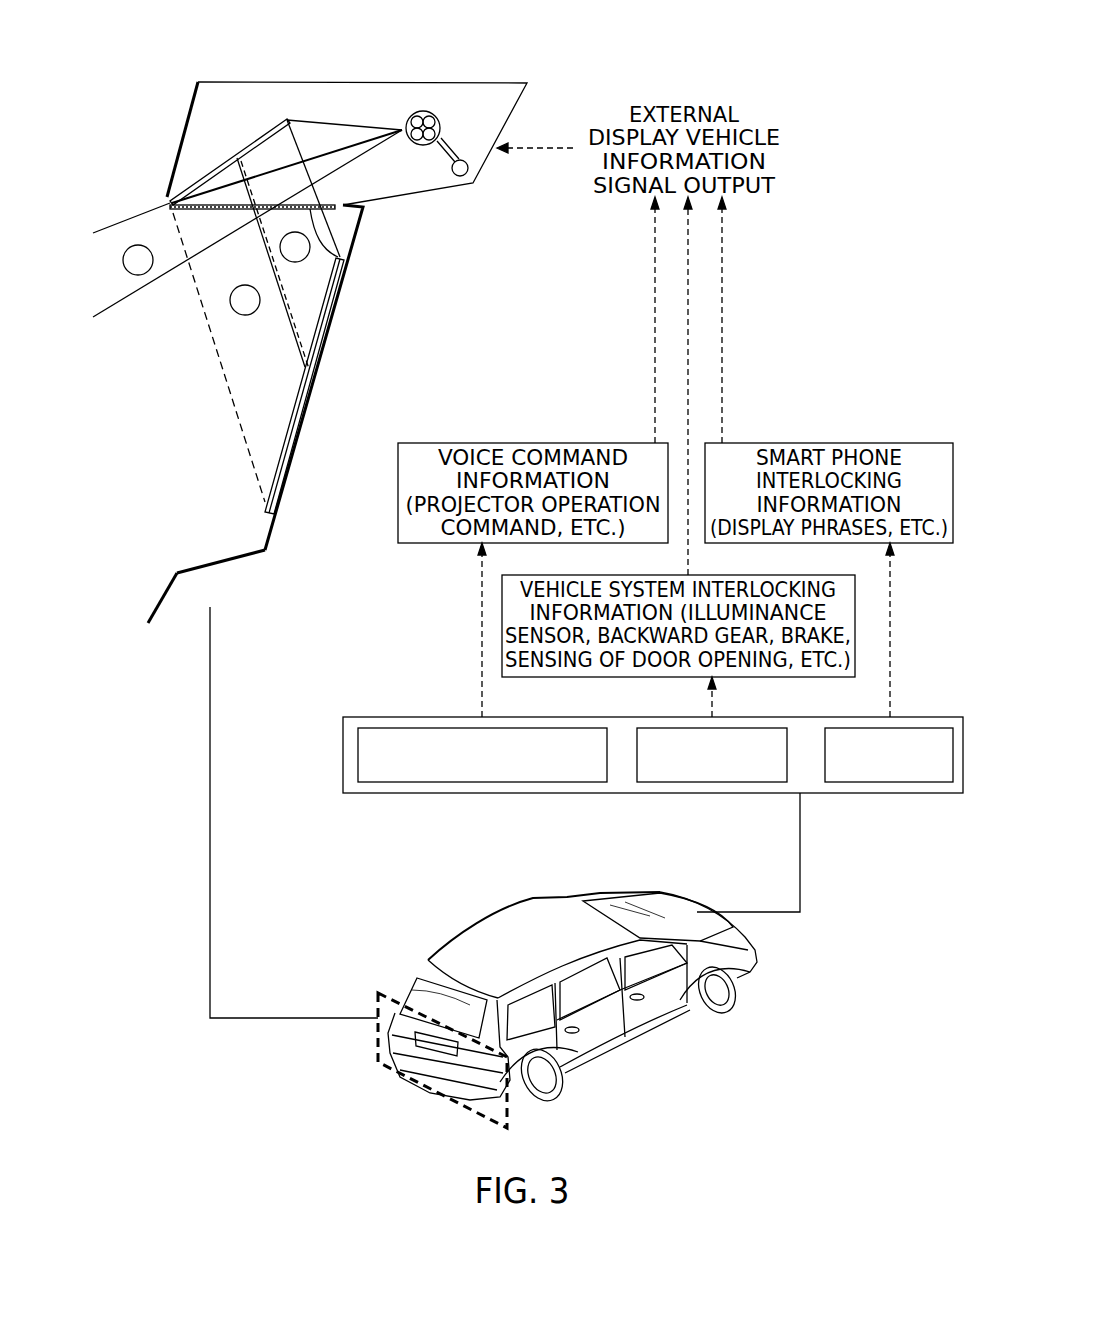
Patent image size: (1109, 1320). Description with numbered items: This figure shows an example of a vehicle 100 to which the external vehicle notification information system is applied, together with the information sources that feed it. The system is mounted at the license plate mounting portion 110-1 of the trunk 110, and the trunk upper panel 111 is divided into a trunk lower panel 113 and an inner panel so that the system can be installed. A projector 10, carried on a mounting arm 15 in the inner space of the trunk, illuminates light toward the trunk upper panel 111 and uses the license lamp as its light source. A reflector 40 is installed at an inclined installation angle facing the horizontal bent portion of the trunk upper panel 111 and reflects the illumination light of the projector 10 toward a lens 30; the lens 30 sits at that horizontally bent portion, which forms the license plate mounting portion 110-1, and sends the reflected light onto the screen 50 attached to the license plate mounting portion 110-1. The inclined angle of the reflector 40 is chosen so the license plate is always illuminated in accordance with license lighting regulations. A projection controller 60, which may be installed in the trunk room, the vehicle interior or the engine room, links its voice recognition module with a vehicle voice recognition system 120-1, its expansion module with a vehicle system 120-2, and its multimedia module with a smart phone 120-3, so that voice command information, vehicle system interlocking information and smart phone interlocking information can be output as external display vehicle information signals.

The projector 10 is at (430, 110).
The projector mounting arm 15 is at (430, 195).
The lens 30 is at (343, 277).
The reflector 40 is at (247, 140).
The screen 50 is at (330, 327).
The projection controller 60 is at (937, 795).
The vehicle 100 is at (547, 908).
The trunk 110 is at (168, 100).
The license plate mounting portion 110-1 is at (272, 530).
The trunk upper panel 111 is at (175, 155).
The trunk lower panel 113 is at (230, 562).
The vehicle voice recognition system 120-1 is at (438, 782).
The vehicle system 120-2 is at (688, 782).
The smart phone 120-3 is at (870, 782).